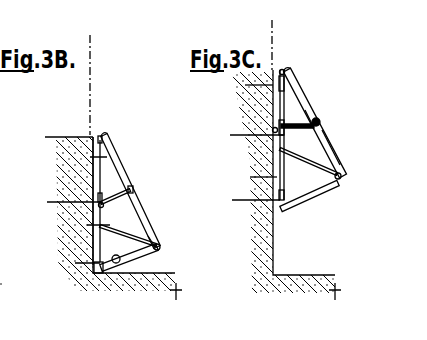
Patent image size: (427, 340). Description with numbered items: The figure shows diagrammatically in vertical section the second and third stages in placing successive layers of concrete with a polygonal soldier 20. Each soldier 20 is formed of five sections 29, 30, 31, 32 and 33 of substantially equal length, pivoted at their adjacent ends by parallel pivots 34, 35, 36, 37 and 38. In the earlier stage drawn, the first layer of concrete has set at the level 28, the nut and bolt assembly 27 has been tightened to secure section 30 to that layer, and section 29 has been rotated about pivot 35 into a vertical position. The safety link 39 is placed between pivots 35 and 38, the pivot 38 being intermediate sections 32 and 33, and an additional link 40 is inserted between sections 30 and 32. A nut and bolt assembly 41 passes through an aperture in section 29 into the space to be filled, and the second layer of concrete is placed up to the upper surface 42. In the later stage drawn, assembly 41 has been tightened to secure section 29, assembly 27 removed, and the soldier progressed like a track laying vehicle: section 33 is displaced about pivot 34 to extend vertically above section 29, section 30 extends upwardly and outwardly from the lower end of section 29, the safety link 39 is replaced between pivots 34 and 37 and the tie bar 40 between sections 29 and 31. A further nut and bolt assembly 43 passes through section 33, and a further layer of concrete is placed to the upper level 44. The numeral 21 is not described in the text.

In FIG. 3B, the soldier 20 is at (137, 182).
In FIG. 3C, the soldier 20 is at (297, 73).
In FIG. 3B, the adjacent figure reference 21 is at (7, 270).
In FIG. 3B, the nut and bolt assembly 27 is at (78, 228).
In FIG. 3B, the concrete level 28 is at (68, 203).
In FIG. 3C, the concrete level 28 is at (237, 200).
In FIG. 3B, the section 29 is at (93, 181).
In FIG. 3C, the section 29 is at (257, 180).
In FIG. 3B, the section 30 is at (94, 265).
In FIG. 3C, the section 30 is at (310, 196).
In FIG. 3B, the section 31 is at (123, 264).
In FIG. 3C, the section 31 is at (330, 147).
In FIG. 3B, the section 32 is at (156, 240).
In FIG. 3C, the section 32 is at (310, 115).
In FIG. 3B, the section 33 is at (123, 157).
In FIG. 3C, the section 33 is at (278, 104).
In FIG. 3B, the pivot 34 is at (101, 136).
In FIG. 3C, the pivot 34 is at (273, 129).
In FIG. 3B, the pivot 35 is at (103, 207).
In FIG. 3B, the pivot 36 is at (112, 270).
In FIG. 3C, the pivot 36 is at (343, 178).
In FIG. 3B, the pivot 37 is at (159, 250).
In FIG. 3C, the pivot 37 is at (320, 123).
In FIG. 3B, the pivot 38 is at (133, 190).
In FIG. 3C, the pivot 38 is at (283, 69).
In FIG. 3B, the safety link 39 is at (115, 198).
In FIG. 3C, the safety link 39 is at (297, 126).
In FIG. 3B, the link 40 is at (133, 233).
In FIG. 3C, the link 40 is at (333, 184).
In FIG. 3B, the nut and bolt assembly 41 is at (80, 157).
In FIG. 3C, the nut and bolt assembly 41 is at (252, 157).
In FIG. 3B, the upper surface 42 is at (62, 137).
In FIG. 3C, the upper surface 42 is at (243, 135).
In FIG. 3C, the nut and bolt assembly 43 is at (248, 90).
In FIG. 3C, the upper level 44 is at (245, 75).